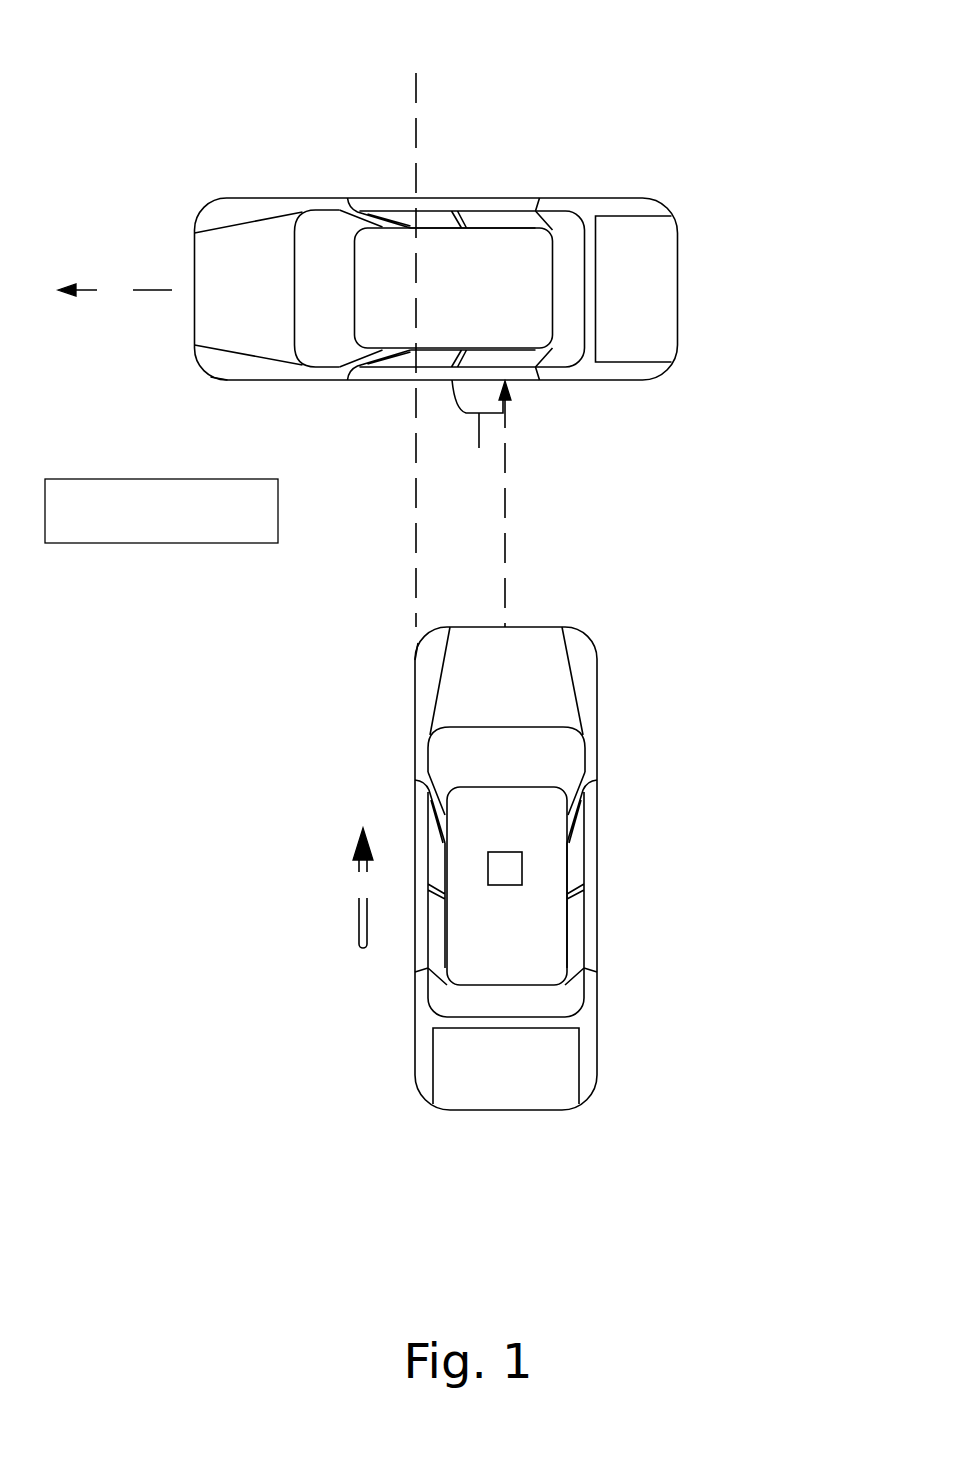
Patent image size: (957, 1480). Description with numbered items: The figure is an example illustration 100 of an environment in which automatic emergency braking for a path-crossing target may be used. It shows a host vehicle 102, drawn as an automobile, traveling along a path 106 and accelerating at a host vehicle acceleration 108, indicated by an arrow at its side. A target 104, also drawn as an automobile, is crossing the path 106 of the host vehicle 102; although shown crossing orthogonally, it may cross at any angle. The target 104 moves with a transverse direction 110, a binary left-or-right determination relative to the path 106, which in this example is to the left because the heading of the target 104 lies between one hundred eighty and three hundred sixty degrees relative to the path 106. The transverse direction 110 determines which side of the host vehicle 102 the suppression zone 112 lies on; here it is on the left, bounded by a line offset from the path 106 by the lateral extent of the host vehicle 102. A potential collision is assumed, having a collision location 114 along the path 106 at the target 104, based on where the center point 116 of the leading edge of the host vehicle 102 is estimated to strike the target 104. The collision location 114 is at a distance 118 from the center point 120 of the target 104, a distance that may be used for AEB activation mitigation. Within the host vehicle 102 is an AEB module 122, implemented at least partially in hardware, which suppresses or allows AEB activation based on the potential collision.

The example illustration 100 is at (813, 56).
The host vehicle 102 is at (597, 700).
The target 104 is at (678, 350).
The path 106 is at (506, 583).
The host vehicle acceleration 108 is at (363, 888).
The transverse direction 110 is at (115, 290).
The suppression zone 112 is at (161, 511).
The collision location 114 is at (503, 383).
The center point 116 is at (500, 627).
The distance 118 is at (479, 448).
The center point 120 is at (452, 382).
The AEB module 122 is at (522, 870).